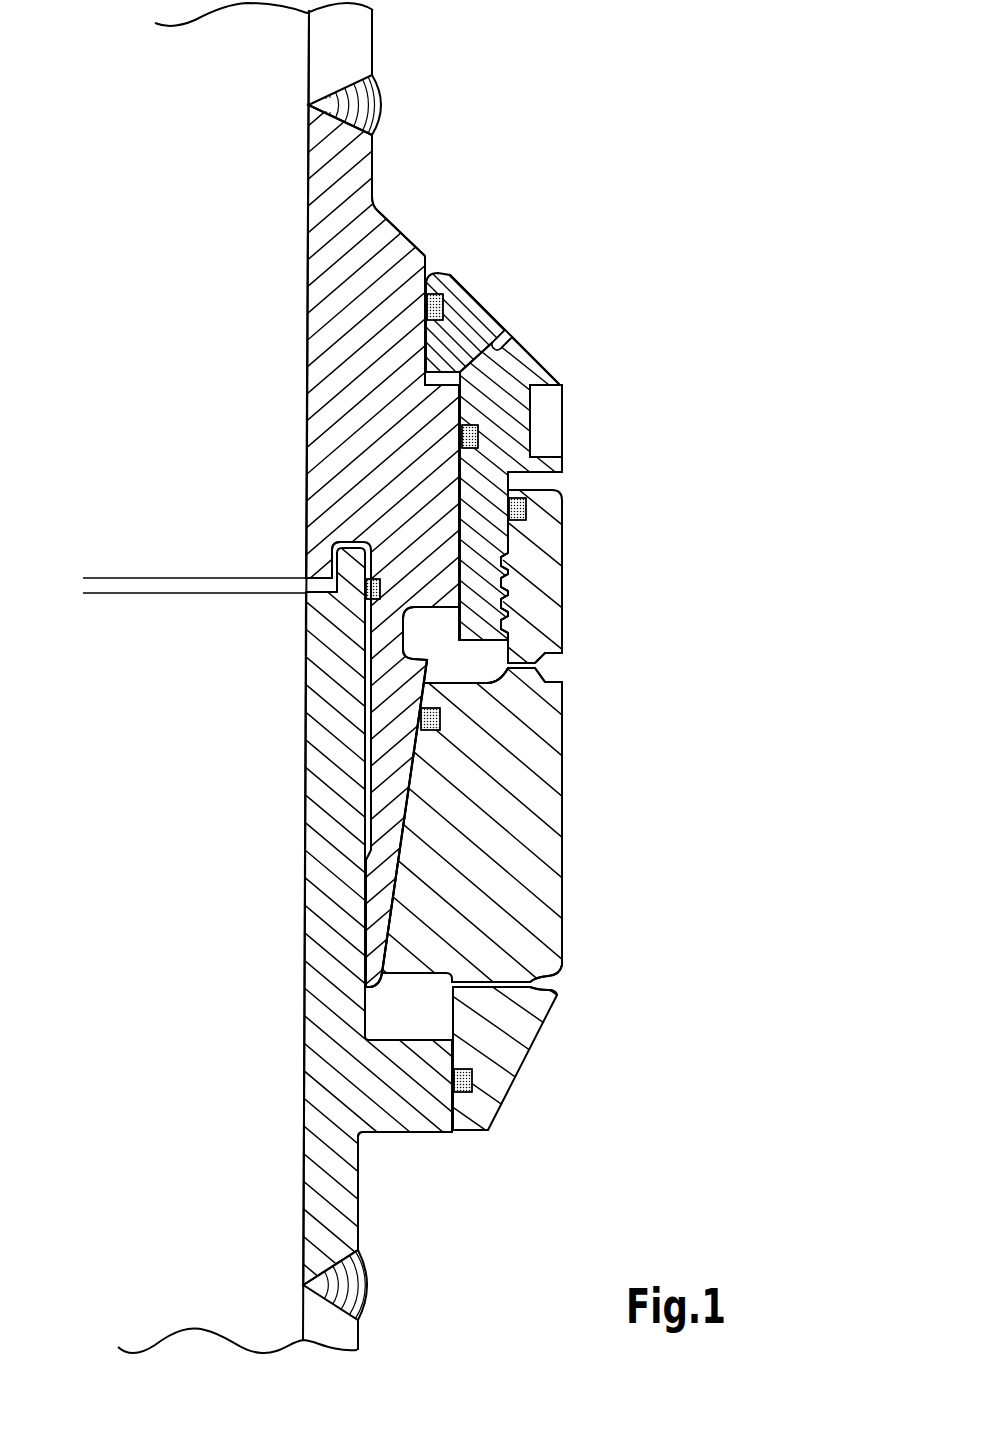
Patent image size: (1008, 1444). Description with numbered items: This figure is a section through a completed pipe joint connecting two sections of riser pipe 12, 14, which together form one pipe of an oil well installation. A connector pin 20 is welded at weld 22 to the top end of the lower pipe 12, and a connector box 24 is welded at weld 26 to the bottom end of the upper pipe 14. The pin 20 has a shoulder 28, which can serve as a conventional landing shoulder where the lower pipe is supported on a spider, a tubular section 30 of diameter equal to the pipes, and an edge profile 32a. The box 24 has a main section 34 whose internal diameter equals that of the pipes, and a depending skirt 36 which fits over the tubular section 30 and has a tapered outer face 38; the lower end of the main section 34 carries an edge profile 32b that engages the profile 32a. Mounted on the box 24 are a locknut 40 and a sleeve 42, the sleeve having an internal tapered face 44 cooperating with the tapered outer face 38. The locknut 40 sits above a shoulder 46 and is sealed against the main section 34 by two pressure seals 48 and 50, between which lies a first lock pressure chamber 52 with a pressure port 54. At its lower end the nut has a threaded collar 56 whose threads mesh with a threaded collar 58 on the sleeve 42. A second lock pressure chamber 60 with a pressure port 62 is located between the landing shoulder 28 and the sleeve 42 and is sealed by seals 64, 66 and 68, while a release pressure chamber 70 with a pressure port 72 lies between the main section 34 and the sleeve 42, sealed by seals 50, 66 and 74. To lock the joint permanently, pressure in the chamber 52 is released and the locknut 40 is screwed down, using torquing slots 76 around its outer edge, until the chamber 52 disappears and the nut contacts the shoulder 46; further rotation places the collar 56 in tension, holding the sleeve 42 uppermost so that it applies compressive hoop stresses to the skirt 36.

The riser pipe 12 is at (350, 1343).
The riser pipe 14 is at (350, 50).
The connector pin 20 is at (345, 1190).
The weld 22 is at (365, 1283).
The connector box 24 is at (376, 199).
The weld 26 is at (365, 107).
The shoulder 28 is at (405, 1127).
The tubular section 30 is at (335, 830).
The edge profile 32a is at (346, 566).
The edge profile 32b is at (323, 577).
The main section 34 is at (330, 290).
The depending skirt 36 is at (400, 782).
The tapered outer face 38 is at (407, 840).
The locknut 40 is at (515, 343).
The sleeve 42 is at (528, 896).
The internal tapered face 44 is at (390, 927).
The shoulder 46 is at (440, 382).
The pressure seal 48 is at (445, 297).
The pressure seal 50 is at (480, 437).
The first lock pressure chamber 52 is at (465, 374).
The pressure port 54 is at (503, 337).
The threaded collar 56 is at (484, 554).
The threaded collar 58 is at (538, 597).
The second lock pressure chamber 60 is at (420, 1013).
The pressure port 62 is at (548, 984).
The seal 64 is at (474, 1082).
The seal 66 is at (447, 717).
The seal 68 is at (362, 598).
The release pressure chamber 70 is at (465, 655).
The pressure port 72 is at (557, 668).
The seal 74 is at (530, 502).
The torquing slots 76 is at (540, 415).